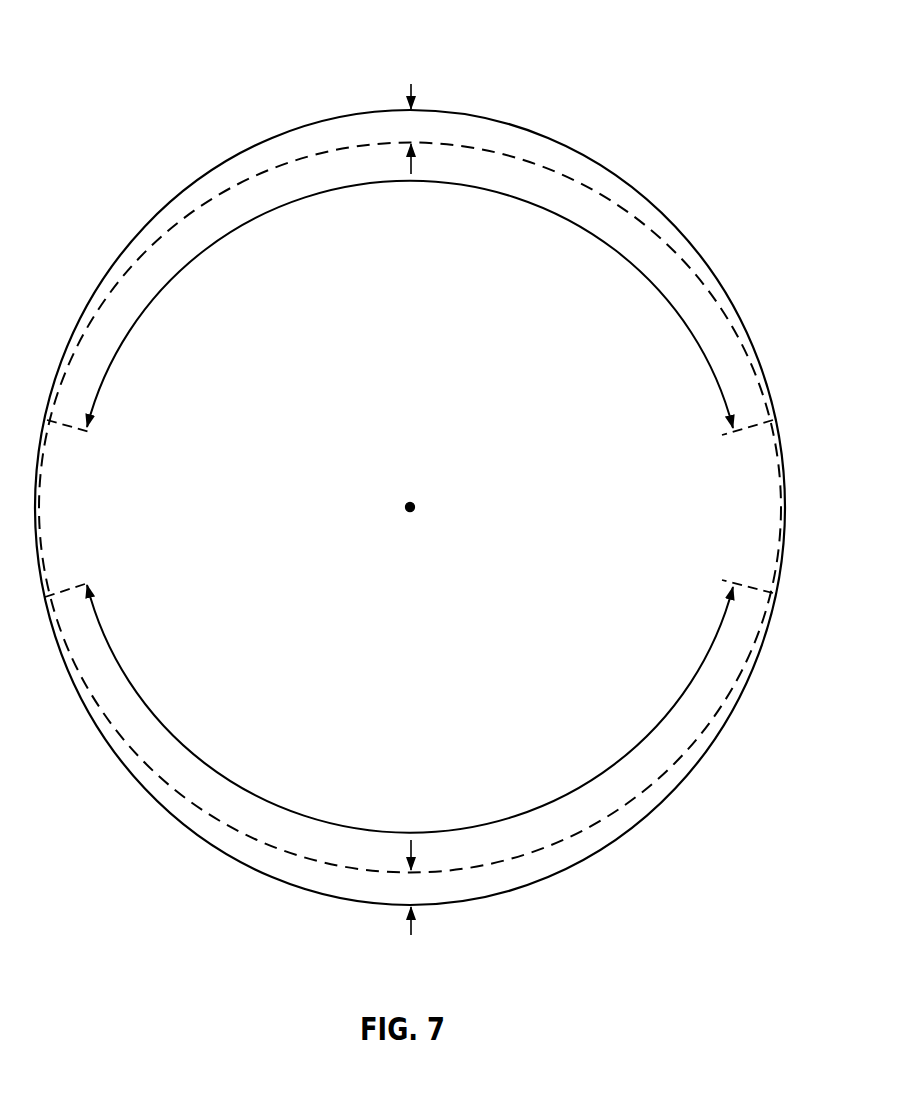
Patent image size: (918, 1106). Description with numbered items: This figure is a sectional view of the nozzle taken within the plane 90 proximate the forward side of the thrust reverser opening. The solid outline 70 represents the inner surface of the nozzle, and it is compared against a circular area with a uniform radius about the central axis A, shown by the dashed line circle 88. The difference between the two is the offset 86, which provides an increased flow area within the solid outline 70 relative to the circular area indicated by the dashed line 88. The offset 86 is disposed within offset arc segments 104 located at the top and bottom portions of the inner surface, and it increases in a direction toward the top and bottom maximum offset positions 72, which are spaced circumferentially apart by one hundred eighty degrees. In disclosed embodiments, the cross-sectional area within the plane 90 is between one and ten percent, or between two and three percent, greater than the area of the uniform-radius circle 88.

The plane 90 is at (144, 34).
The solid outline 70 is at (556, 881).
The maximum offset positions 72 is at (387, 105).
The offset 86 is at (412, 84).
The dashed line circle 88 is at (180, 223).
The offset arc segments 104 is at (276, 209).
The central axis A is at (405, 505).